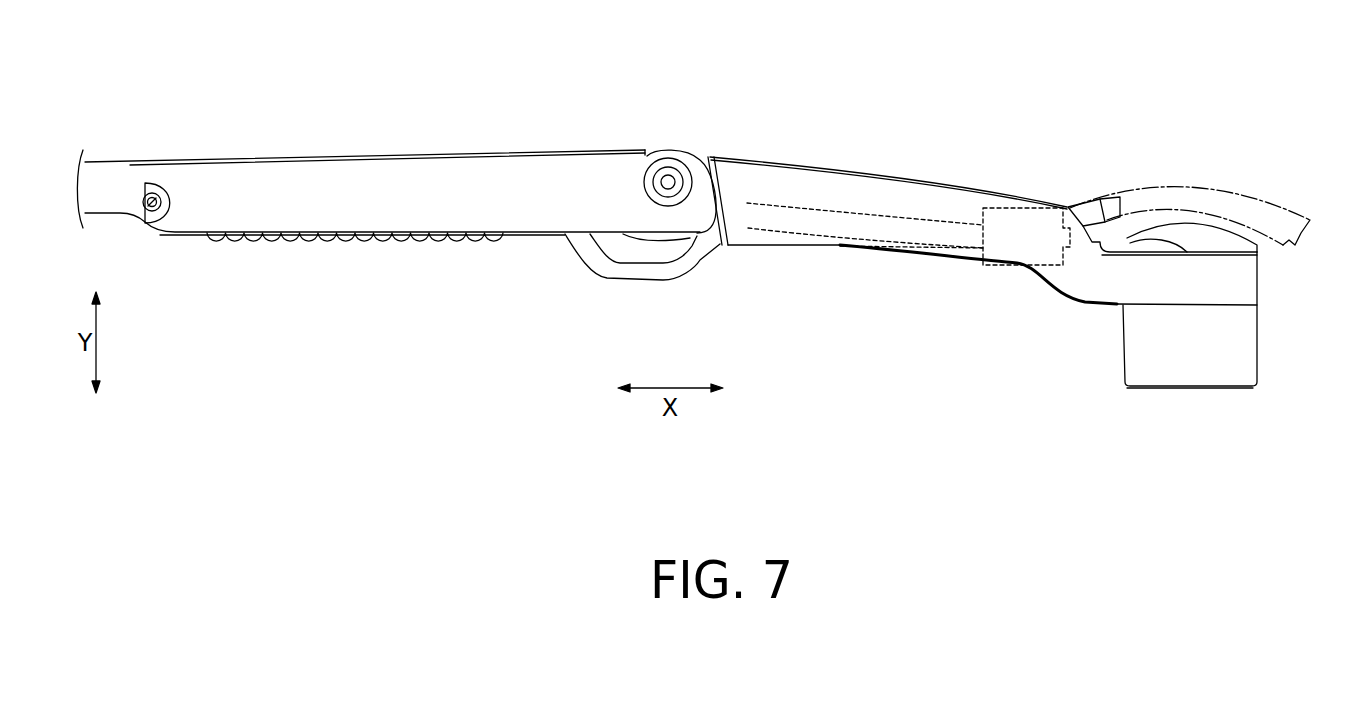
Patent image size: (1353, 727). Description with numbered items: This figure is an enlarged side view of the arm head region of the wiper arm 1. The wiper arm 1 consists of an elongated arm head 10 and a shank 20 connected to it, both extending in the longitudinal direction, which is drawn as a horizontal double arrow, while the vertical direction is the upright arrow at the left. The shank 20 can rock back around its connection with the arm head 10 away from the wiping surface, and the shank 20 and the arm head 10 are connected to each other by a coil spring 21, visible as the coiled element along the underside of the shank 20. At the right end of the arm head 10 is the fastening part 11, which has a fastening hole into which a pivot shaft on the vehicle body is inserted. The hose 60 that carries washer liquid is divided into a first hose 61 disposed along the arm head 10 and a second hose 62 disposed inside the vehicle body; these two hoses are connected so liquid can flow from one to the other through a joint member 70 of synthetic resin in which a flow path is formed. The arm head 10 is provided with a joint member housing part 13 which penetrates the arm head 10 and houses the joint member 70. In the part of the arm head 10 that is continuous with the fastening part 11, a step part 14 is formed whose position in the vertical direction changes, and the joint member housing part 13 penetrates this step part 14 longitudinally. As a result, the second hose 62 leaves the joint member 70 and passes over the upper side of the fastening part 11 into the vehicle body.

The wiper arm 1 is at (837, 110).
The arm head 10 is at (982, 189).
The fastening part 11 is at (1248, 350).
The joint member housing part 13 is at (992, 273).
The step part 14 is at (1063, 220).
The shank 20 is at (532, 150).
The coil spring 21 is at (495, 243).
The hose 60 is at (1028, 201).
The first hose 61 is at (842, 248).
The second hose 62 is at (1195, 186).
The joint member 70 is at (1035, 268).